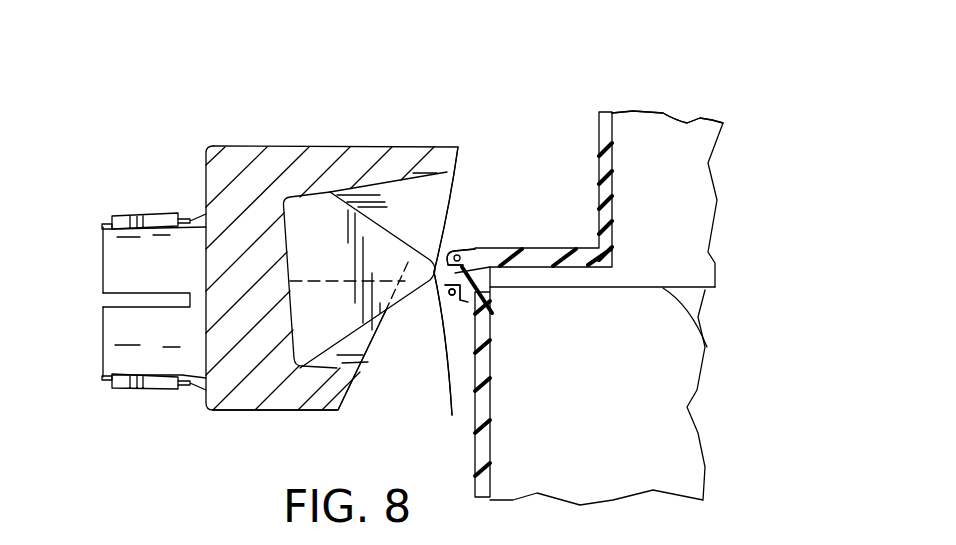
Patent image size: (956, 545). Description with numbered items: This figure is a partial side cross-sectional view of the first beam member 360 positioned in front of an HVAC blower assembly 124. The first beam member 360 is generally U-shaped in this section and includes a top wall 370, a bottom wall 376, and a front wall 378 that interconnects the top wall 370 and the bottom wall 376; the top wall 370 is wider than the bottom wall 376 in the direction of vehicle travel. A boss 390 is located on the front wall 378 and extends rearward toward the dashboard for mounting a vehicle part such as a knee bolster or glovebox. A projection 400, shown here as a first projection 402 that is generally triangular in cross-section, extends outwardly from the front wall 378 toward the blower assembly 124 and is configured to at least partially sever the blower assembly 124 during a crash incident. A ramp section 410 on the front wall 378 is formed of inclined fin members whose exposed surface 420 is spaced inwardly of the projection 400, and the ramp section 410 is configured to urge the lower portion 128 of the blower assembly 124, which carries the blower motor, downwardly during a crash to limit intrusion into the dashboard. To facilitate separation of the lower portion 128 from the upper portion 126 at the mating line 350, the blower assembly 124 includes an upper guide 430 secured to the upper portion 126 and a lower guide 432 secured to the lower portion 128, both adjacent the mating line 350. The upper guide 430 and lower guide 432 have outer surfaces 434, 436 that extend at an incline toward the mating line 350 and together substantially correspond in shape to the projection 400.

The blower assembly 124 is at (712, 207).
The upper portion 126 is at (692, 135).
The lower portion 128 is at (677, 395).
The mating line 350 is at (707, 345).
The first beam member 360 is at (268, 140).
The top wall 370 is at (367, 147).
The bottom wall 376 is at (240, 412).
The front wall 378 is at (305, 193).
The boss 390 is at (112, 267).
The projection 400 is at (410, 312).
The first projection 402 is at (328, 333).
The ramp section 410 is at (430, 197).
The exposed surface 420 is at (363, 365).
The upper guide 430 is at (460, 253).
The lower guide 432 is at (462, 292).
The outer surface 434 is at (452, 250).
The outer surface 436 is at (451, 343).